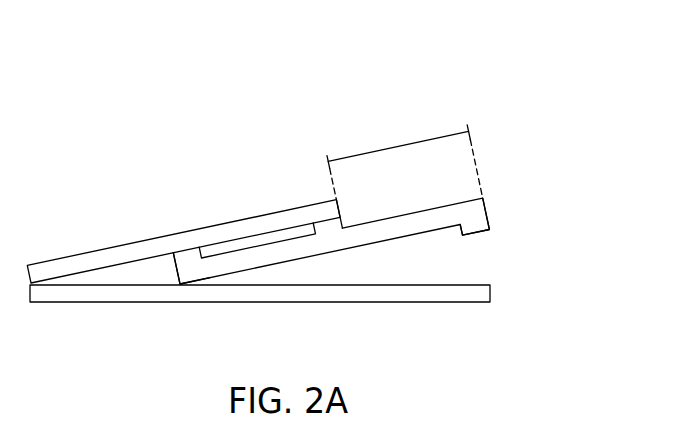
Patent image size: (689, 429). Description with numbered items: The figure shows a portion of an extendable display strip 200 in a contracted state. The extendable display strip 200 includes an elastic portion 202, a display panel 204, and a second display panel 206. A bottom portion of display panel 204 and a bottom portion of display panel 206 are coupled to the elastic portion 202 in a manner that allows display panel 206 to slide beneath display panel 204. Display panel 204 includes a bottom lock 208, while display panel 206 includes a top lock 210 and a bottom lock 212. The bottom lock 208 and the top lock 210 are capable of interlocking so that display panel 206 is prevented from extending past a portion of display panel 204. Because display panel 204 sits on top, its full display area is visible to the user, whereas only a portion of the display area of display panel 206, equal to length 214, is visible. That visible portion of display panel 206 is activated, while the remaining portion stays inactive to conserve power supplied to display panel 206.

The extendable display strip 200 is at (498, 67).
The elastic portion 202 is at (490, 292).
The display panel 204 is at (113, 247).
The display panel 206 is at (402, 218).
The bottom lock 208 is at (325, 218).
The top lock 210 is at (185, 284).
The bottom lock 212 is at (482, 213).
The length 214 is at (397, 146).